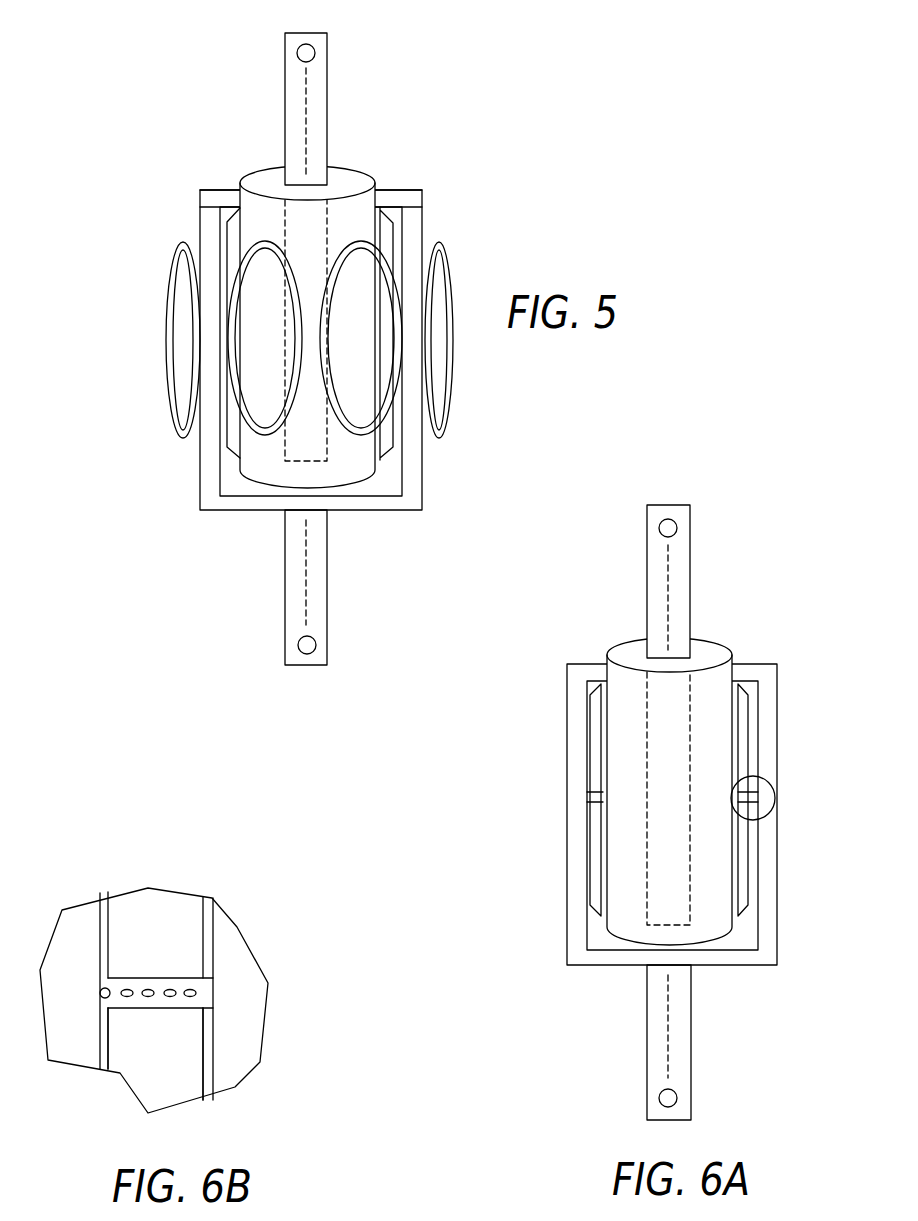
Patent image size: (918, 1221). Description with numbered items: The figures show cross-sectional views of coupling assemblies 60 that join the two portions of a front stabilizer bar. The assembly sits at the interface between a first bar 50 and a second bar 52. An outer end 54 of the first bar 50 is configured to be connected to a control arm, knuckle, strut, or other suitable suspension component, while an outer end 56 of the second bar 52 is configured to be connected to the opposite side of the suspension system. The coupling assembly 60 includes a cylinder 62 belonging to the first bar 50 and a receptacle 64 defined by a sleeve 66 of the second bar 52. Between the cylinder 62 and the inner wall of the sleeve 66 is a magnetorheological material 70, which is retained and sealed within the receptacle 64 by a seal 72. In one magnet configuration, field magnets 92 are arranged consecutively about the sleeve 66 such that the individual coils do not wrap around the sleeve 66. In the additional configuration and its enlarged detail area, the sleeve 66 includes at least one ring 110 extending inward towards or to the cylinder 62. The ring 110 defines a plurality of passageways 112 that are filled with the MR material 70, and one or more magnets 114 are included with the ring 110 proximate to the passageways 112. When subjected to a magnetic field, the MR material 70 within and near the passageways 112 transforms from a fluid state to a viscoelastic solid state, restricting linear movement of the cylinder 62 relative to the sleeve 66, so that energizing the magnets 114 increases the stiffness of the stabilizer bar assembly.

In FIG. 5, the first bar 50 is at (328, 100).
In FIG. 6A, the first bar 50 is at (693, 573).
In FIG. 5, the second bar 52 is at (285, 590).
In FIG. 6A, the second bar 52 is at (690, 1008).
In FIG. 5, the outer end of the first bar 54 is at (307, 33).
In FIG. 6A, the outer end of the first bar 54 is at (667, 505).
In FIG. 5, the outer end of the second bar 56 is at (310, 665).
In FIG. 6A, the outer end of the second bar 56 is at (677, 1120).
In FIG. 5, the coupling assembly 60 is at (88, 120).
In FIG. 6A, the coupling assembly 60 is at (537, 642).
In FIG. 5, the cylinder 62 is at (265, 218).
In FIG. 6A, the cylinder 62 is at (713, 658).
In FIG. 5, the receptacle 64 is at (237, 493).
In FIG. 5, the sleeve 66 is at (200, 450).
In FIG. 6A, the sleeve 66 is at (567, 862).
In FIG. 5, the magnetorheological material 70 is at (232, 437).
In FIG. 6A, the magnetorheological material 70 is at (598, 813).
In FIG. 6B, the magnetorheological material 70 is at (138, 933).
In FIG. 5, the seal 72 is at (200, 190).
In FIG. 5, the field magnets 92 is at (358, 247).
In FIG. 6A, the ring 110 is at (598, 790).
In FIG. 6B, the ring 110 is at (168, 973).
In FIG. 6B, the passageways 112 is at (172, 997).
In FIG. 6B, the magnets 114 is at (137, 1000).